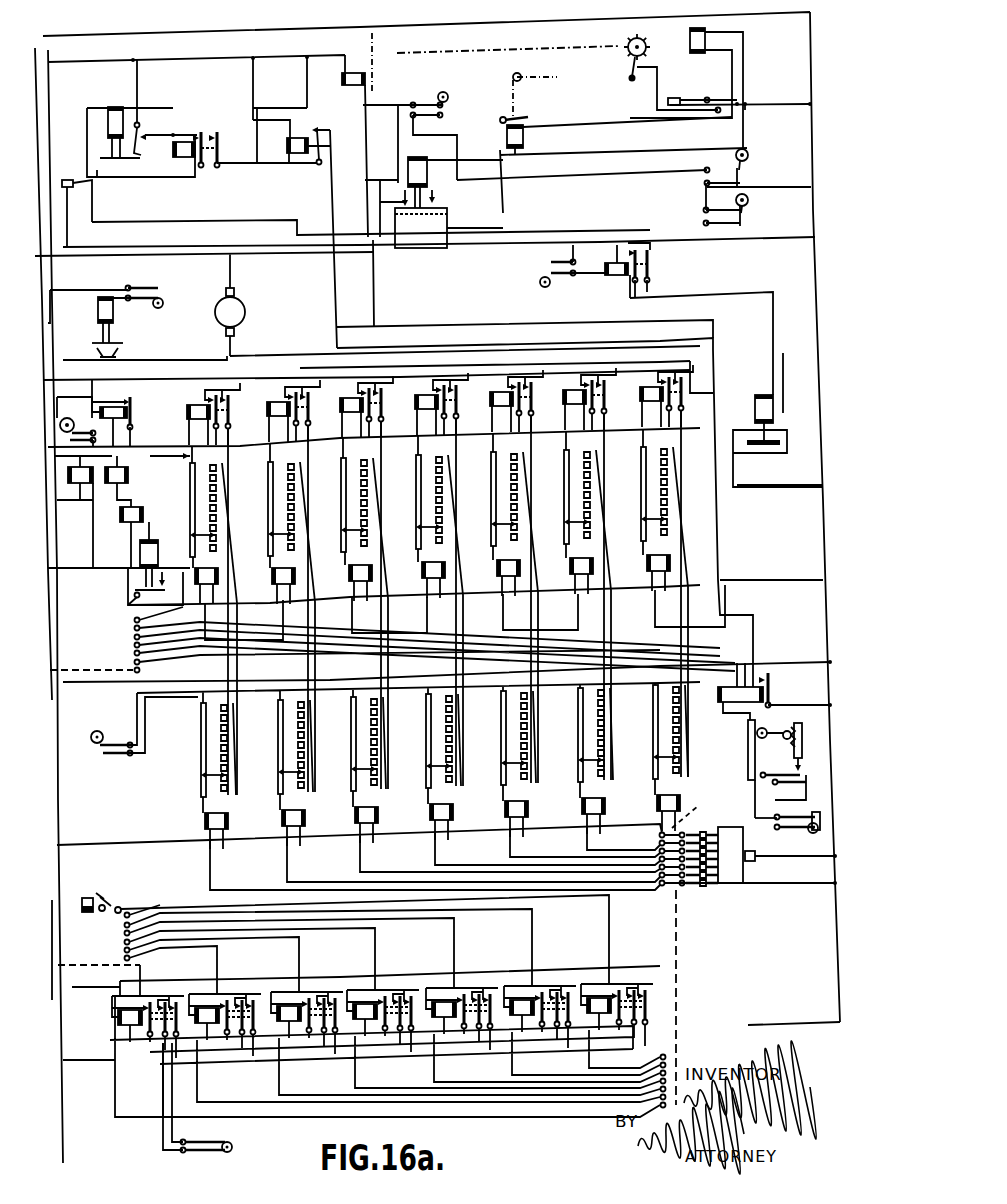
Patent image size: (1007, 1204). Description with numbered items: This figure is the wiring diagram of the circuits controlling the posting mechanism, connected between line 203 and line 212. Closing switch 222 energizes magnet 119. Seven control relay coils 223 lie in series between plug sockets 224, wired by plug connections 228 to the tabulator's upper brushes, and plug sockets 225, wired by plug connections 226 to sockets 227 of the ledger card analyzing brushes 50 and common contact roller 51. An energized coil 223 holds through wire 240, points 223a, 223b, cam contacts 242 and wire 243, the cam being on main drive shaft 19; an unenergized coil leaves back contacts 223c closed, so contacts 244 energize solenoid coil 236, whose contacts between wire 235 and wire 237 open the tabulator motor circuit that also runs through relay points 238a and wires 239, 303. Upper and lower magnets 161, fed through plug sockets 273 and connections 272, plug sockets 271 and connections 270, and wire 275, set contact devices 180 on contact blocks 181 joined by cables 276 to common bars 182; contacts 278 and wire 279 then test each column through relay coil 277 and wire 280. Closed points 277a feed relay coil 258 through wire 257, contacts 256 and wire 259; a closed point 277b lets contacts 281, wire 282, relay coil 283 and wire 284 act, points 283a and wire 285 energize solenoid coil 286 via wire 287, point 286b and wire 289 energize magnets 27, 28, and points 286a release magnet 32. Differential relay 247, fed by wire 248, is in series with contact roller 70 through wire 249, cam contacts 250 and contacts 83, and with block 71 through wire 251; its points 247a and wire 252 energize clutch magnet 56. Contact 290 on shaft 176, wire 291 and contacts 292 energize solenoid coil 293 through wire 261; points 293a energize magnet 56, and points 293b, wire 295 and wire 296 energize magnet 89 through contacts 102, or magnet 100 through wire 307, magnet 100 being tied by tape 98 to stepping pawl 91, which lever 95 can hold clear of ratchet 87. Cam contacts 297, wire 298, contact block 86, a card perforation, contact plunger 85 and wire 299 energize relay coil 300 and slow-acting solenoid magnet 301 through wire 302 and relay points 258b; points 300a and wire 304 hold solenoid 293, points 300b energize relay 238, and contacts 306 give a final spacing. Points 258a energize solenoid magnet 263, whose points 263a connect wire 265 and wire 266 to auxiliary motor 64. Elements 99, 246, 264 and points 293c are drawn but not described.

The supply conductor 282 is at (50, 48).
The supply conductor 212 is at (217, 36).
The relay coil 56 is at (350, 73).
The star wheel 87 is at (640, 38).
The relay coil 89 is at (705, 33).
The conductor 203 is at (38, 97).
The relay 301 is at (115, 107).
The relay contact 300a is at (200, 132).
The relay contact 300b is at (218, 130).
The conductor 303 is at (252, 84).
The conductor 304 is at (411, 104).
The cam contact 19 is at (448, 95).
The contact 292 is at (443, 106).
The cam follower 98 is at (552, 72).
The lever 91 is at (627, 80).
The bracket 95 is at (644, 88).
The switch 102 is at (697, 98).
The contact 99 is at (522, 116).
The conductor 307 is at (577, 126).
The relay coil 100 is at (524, 142).
The conductor 296 is at (608, 152).
The contact 306 is at (154, 107).
The relay contact 238a is at (321, 131).
The resistor 86 is at (67, 180).
The relay coil 300 is at (181, 158).
The conductor 239 is at (270, 165).
The relay coil 238 is at (303, 156).
The relay coil 293 is at (407, 172).
The relay contact 293a is at (400, 204).
The relay contact 293b is at (440, 199).
The relay contact 293c is at (449, 228).
The conductor 295 is at (448, 226).
The conductor 85 is at (68, 200).
The conductor 299 is at (128, 178).
The conductor 302 is at (200, 222).
The conductor 298 is at (160, 245).
The conductor 291 is at (616, 178).
The relay contact 258a is at (652, 243).
The cam contact 176 is at (749, 156).
The contact 290 is at (745, 175).
The contact 297 is at (747, 225).
The contact 256 is at (550, 268).
The relay coil 258 is at (610, 263).
The relay contact 258b is at (656, 256).
The conductor 287 is at (760, 247).
The conductor 246 is at (88, 290).
The contact 244 is at (160, 290).
The motor 64 is at (246, 311).
The relay coil 236 is at (115, 317).
The conductor 261 is at (282, 256).
The conductor 252 is at (376, 282).
The conductor 257 is at (482, 250).
The conductor 259 is at (614, 299).
The relay armature 235 is at (78, 360).
The conductor 237 is at (170, 360).
The conductor 266 is at (233, 345).
The conductor 264 is at (349, 367).
The conductor 284 is at (215, 378).
The relay contact 283a is at (131, 396).
The relay coil 283 is at (128, 414).
The relay contact 277a is at (210, 396).
The contact 281 is at (97, 436).
The relay 277 is at (194, 420).
The relay contact 277b is at (232, 402).
The relay coil 263 is at (755, 407).
The relay contacts 263a is at (745, 455).
The conductor 285 is at (122, 456).
The contact bar 182 is at (191, 462).
The conductor 280 is at (325, 445).
The relay coil 27 is at (82, 484).
The relay coil 28 is at (122, 484).
The contact segments 181 is at (286, 513).
The conductor 289 is at (93, 515).
The relay coil 32 is at (126, 523).
The relay coil 286 is at (158, 545).
The wiper contact 180 is at (198, 555).
The conductor 265 is at (757, 488).
The conductor 275 is at (790, 580).
The magnet coil 161 is at (272, 578).
The relay contact 286a is at (132, 598).
The relay contact 286b is at (180, 606).
The conductor 276 is at (232, 617).
The terminals 273 is at (132, 640).
The conductor 272 is at (118, 670).
The conductor 248 is at (200, 683).
The relay contact 247a is at (772, 672).
The relay coil 247 is at (716, 693).
The conductor 279 is at (790, 672).
The contact 278 is at (100, 755).
The conductor 251 is at (723, 712).
The pawl 70 is at (766, 730).
The rack 71 is at (748, 748).
The contact 83 is at (805, 765).
The conductor 249 is at (752, 790).
The contact 250 is at (818, 807).
The connector 270 is at (694, 807).
The terminal block 50 is at (718, 821).
The terminal 51 is at (753, 851).
The key 119 is at (86, 898).
The key contact 222 is at (106, 898).
The terminals 271 is at (672, 890).
The terminals 227 is at (692, 888).
The terminals 224 is at (124, 958).
The relay contact 223a is at (150, 1002).
The relay contact 223b is at (165, 1002).
The relay contact 223c is at (182, 1000).
The conductor 228 is at (99, 980).
The relay 223 is at (117, 1022).
The cable 226 is at (680, 968).
The conductor 243 is at (750, 1025).
The conductor 240 is at (90, 1065).
The terminals 225 is at (670, 1070).
The contact 242 is at (210, 1152).